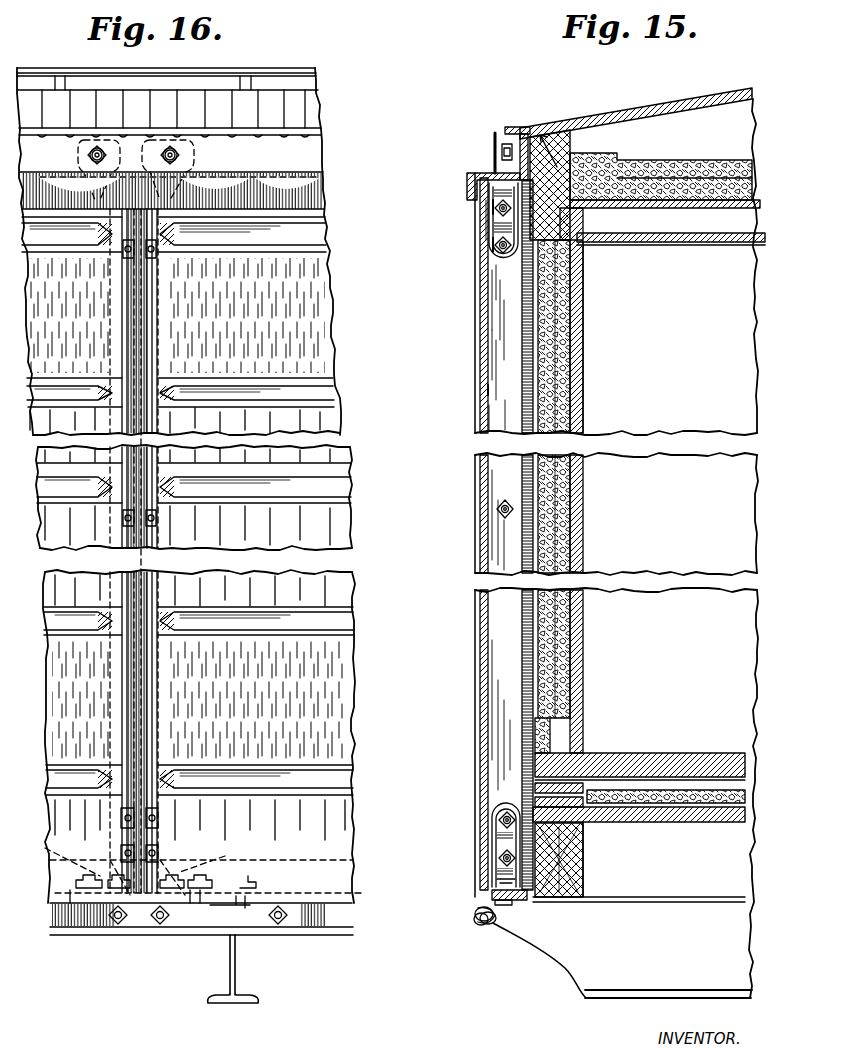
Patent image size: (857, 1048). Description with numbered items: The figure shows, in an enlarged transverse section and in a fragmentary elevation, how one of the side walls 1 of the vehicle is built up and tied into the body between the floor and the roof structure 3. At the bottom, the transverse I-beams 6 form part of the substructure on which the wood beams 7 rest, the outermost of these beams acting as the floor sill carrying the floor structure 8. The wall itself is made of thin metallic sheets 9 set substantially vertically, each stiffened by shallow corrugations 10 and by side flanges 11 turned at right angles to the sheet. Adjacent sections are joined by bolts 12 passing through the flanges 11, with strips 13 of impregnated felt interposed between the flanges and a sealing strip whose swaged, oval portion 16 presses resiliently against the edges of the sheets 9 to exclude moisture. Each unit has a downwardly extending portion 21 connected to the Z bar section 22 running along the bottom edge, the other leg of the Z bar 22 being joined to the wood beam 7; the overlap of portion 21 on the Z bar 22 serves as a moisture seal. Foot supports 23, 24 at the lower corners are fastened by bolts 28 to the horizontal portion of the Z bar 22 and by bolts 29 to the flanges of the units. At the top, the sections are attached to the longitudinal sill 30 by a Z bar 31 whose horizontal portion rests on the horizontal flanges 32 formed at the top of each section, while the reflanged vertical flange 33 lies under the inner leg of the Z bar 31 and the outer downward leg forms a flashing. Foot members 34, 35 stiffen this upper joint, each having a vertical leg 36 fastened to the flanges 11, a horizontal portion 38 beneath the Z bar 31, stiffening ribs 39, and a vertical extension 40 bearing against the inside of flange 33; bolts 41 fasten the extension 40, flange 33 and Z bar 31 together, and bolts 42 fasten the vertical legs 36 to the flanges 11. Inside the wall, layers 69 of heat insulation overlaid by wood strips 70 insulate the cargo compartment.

In FIG. 16, the side wall 1 is at (320, 366).
In FIG. 15, the side wall 1 is at (482, 509).
In FIG. 16, the roof structure 3 is at (305, 101).
In FIG. 15, the roof structure 3 is at (672, 101).
In FIG. 16, the transverse I-beam 6 is at (237, 973).
In FIG. 15, the transverse I-beam 6 is at (690, 962).
In FIG. 15, the wood beam 7 is at (585, 865).
In FIG. 15, the floor structure 8 is at (687, 825).
In FIG. 16, the metallic sheet 9 is at (56, 331).
In FIG. 15, the metallic sheet 9 is at (480, 327).
In FIG. 16, the corrugation 10 is at (288, 478).
In FIG. 15, the corrugation 10 is at (487, 386).
In FIG. 15, the side flange 11 is at (500, 413).
In FIG. 16, the bolt 12 is at (158, 518).
In FIG. 15, the bolt 12 is at (503, 518).
In FIG. 16, the strip of impregnated felt 13 is at (147, 652).
In FIG. 16, the flattened portion of sealing strip 16 is at (145, 685).
In FIG. 15, the flattened portion of sealing strip 16 is at (478, 640).
In FIG. 15, the downwardly extending portion 21 is at (485, 930).
In FIG. 16, the Z bar section 22 is at (360, 880).
In FIG. 15, the Z bar section 22 is at (492, 925).
In FIG. 16, the foot support 23 is at (74, 867).
In FIG. 16, the foot support 24 is at (201, 870).
In FIG. 15, the foot support 24 is at (490, 809).
In FIG. 16, the bolt 28 is at (90, 936).
In FIG. 15, the bolt 28 is at (495, 878).
In FIG. 16, the bolt 29 is at (168, 837).
In FIG. 15, the bolt 29 is at (501, 857).
In FIG. 15, the top longitudinal sill 30 is at (550, 133).
In FIG. 16, the Z bar 31 is at (313, 158).
In FIG. 15, the Z bar 31 is at (481, 173).
In FIG. 15, the horizontal flange 32 is at (492, 167).
In FIG. 15, the vertical flange 33 is at (517, 140).
In FIG. 16, the foot member 34 is at (80, 153).
In FIG. 16, the foot member 35 is at (188, 153).
In FIG. 15, the foot member 35 is at (493, 186).
In FIG. 15, the vertical leg 36 is at (492, 230).
In FIG. 15, the horizontal portion 38 is at (477, 183).
In FIG. 15, the rib 39 is at (500, 208).
In FIG. 15, the vertical extension 40 is at (583, 142).
In FIG. 16, the bolt 41 is at (175, 150).
In FIG. 15, the bolt 41 is at (497, 152).
In FIG. 16, the bolt 42 is at (158, 258).
In FIG. 15, the bolt 42 is at (490, 193).
In FIG. 15, the layer of heat insulation material 69 is at (557, 565).
In FIG. 15, the wood strip 70 is at (580, 509).